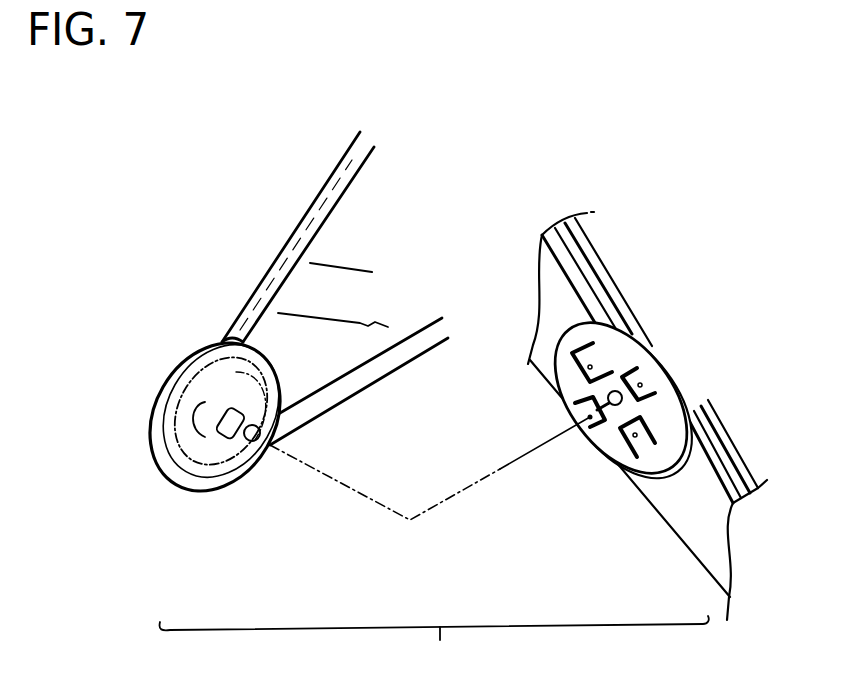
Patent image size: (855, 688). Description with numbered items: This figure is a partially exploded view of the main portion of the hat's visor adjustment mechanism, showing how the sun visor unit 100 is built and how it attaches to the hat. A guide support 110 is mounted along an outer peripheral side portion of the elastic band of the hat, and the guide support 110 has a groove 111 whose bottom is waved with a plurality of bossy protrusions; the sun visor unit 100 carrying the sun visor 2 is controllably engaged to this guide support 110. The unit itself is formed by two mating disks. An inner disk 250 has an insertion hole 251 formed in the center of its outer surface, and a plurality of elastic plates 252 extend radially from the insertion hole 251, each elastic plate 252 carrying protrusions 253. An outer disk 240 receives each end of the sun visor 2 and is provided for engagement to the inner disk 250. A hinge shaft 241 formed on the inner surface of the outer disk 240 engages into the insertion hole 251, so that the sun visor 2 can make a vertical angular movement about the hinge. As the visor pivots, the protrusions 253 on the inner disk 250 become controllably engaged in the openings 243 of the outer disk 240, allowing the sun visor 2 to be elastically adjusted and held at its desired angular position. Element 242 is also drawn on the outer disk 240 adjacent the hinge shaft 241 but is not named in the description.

The sun visor 2 is at (330, 300).
The sun visor unit 100 is at (433, 648).
The guide support 110 is at (733, 438).
The groove 111 is at (704, 434).
The outer disk 240 is at (182, 354).
The hinge shaft 241 is at (222, 445).
The ball 242 is at (247, 442).
The openings 243 is at (184, 430).
The inner disk 250 is at (659, 332).
The insertion hole 251 is at (604, 446).
The elastic plates 252 is at (622, 437).
The protrusions 253 is at (632, 447).